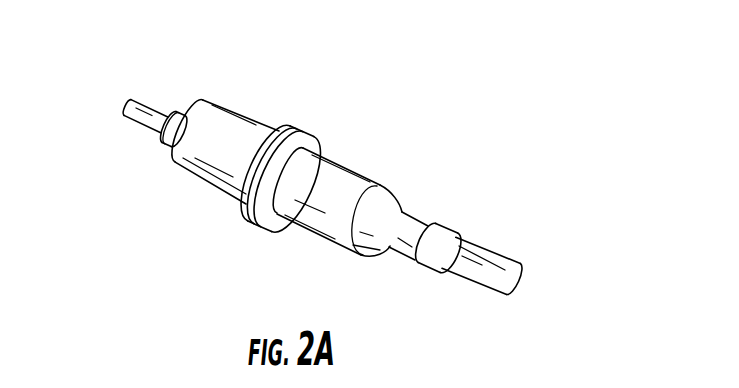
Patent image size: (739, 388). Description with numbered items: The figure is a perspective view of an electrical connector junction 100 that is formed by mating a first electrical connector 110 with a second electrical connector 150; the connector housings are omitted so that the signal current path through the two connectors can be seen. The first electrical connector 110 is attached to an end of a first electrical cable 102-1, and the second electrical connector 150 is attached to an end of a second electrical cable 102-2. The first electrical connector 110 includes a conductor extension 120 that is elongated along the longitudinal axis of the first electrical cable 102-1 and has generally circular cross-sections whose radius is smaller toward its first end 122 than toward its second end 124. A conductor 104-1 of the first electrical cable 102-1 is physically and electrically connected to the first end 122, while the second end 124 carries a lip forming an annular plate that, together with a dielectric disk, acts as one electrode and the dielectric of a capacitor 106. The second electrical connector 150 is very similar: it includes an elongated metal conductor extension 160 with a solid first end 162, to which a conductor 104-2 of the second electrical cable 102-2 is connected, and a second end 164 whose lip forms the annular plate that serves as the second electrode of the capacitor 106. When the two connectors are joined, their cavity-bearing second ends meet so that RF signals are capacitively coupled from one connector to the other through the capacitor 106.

The electrical connector junction 100 is at (512, 105).
The first electrical cable 102-1 is at (133, 96).
The conductor of the first electrical cable 104-1 is at (125, 106).
The capacitor 106 is at (327, 113).
The first electrical connector 110 is at (233, 103).
The conductor extension 120 is at (190, 182).
The first end of the conductor extension 122 is at (163, 146).
The second end of the conductor extension 124 is at (291, 122).
The second electrical connector 150 is at (367, 147).
The conductor extension 160 is at (328, 242).
The first end of the conductor extension 162 is at (400, 211).
The second end of the conductor extension 164 is at (282, 230).
The second electrical cable 102-2 is at (509, 267).
The conductor of the second electrical cable 104-2 is at (517, 283).